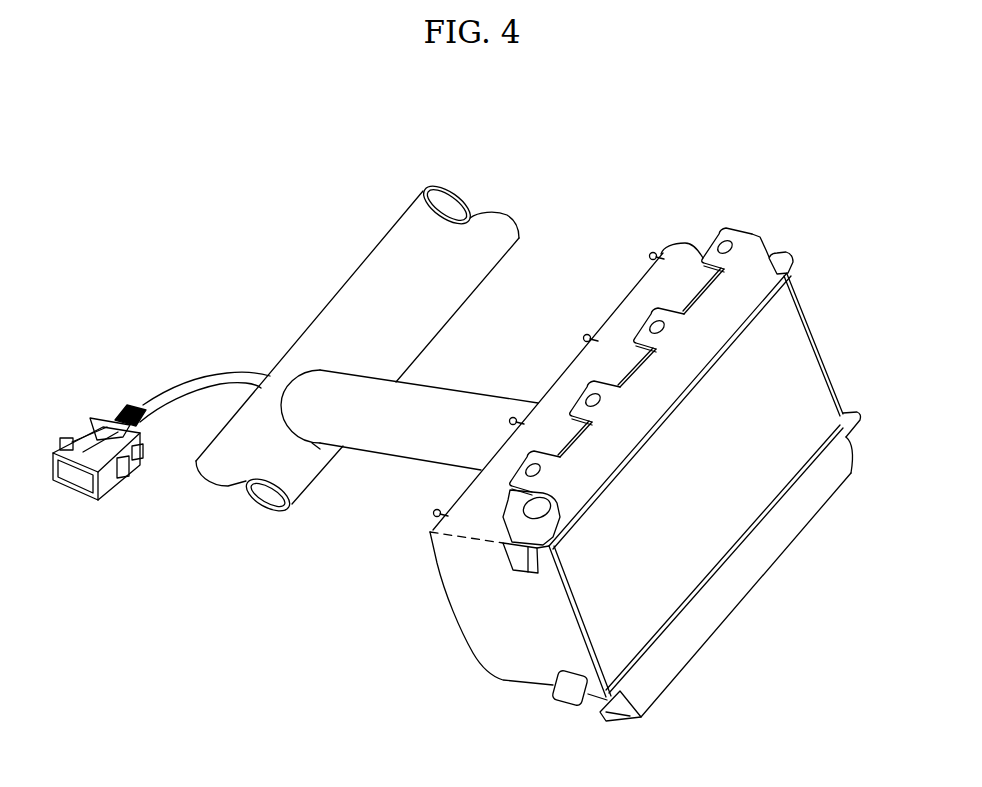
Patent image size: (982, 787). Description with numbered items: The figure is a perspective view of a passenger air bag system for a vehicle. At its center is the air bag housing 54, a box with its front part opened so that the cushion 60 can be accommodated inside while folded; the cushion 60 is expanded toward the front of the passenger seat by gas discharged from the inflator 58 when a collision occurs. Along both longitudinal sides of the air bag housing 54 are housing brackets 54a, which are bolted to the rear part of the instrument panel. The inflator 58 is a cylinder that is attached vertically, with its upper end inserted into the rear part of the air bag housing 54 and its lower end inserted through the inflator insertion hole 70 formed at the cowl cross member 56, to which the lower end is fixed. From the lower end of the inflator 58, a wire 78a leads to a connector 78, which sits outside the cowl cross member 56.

The air bag housing 54 is at (510, 643).
The housing bracket 54a is at (735, 237).
The cowl cross member 56 is at (377, 277).
The inflator 58 is at (453, 410).
The cushion 60 is at (786, 327).
The inflator insertion hole 70 is at (317, 450).
The connector 78 is at (106, 426).
The wire 78a is at (217, 373).